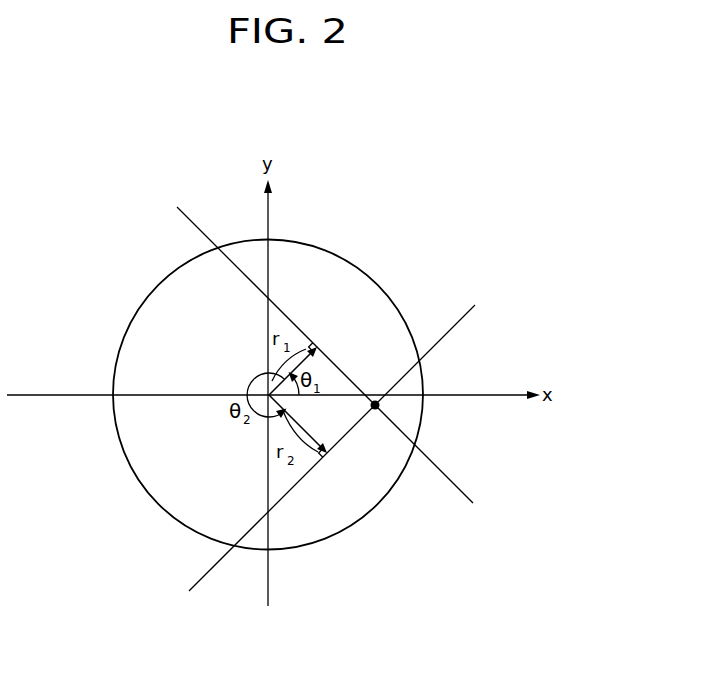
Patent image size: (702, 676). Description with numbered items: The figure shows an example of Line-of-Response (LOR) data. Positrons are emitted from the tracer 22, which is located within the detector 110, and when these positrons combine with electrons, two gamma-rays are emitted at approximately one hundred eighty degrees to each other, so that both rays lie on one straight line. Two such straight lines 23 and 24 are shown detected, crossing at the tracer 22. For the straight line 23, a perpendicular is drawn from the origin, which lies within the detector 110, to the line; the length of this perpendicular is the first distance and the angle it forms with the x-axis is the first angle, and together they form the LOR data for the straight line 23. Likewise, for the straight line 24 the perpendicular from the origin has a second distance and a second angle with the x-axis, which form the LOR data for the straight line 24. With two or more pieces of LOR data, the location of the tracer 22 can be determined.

The detector 110 is at (362, 270).
The tracer 22 is at (380, 409).
The straight line 23 is at (338, 369).
The straight line 24 is at (348, 440).